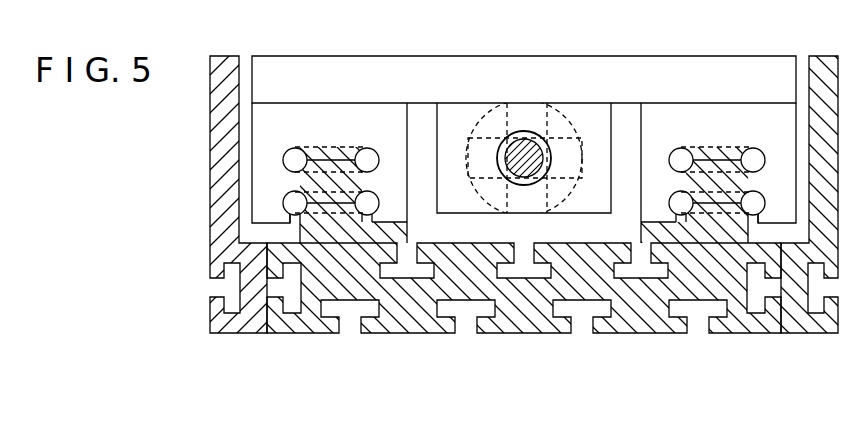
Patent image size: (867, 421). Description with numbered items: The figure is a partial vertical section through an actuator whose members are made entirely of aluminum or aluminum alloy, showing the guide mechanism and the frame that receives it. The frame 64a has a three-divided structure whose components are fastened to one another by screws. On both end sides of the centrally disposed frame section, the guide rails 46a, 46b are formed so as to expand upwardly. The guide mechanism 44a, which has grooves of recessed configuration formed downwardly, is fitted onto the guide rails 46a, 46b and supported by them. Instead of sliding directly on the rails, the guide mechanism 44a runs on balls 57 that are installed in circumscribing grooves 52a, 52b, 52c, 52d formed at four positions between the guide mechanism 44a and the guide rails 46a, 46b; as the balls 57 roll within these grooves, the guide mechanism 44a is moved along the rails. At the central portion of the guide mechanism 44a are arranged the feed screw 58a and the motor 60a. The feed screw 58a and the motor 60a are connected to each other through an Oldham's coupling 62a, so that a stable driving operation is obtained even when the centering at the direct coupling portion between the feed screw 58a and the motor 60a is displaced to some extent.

The guide mechanism 44a is at (343, 50).
The balls 57 is at (368, 149).
The feed screw 58a is at (508, 152).
The motor 60a is at (577, 128).
The Oldham's coupling 62a is at (592, 146).
The circumscribing groove 52a is at (330, 149).
The circumscribing groove 52b is at (347, 212).
The circumscribing groove 52c is at (708, 149).
The circumscribing groove 52d is at (713, 216).
The guide rail 46a is at (347, 212).
The guide rail 46b is at (715, 216).
The frame 64a is at (397, 345).